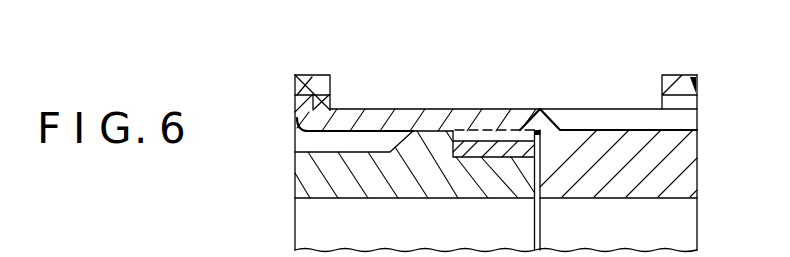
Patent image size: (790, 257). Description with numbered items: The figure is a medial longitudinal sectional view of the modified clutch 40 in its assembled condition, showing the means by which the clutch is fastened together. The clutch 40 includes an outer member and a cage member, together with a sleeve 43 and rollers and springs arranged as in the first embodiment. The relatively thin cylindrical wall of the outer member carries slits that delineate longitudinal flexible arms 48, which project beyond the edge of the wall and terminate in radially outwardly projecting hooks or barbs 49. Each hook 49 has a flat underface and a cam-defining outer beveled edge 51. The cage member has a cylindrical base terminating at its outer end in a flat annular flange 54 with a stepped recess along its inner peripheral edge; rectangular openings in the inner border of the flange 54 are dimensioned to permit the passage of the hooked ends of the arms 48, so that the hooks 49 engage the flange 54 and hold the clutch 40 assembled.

The modified clutch 40 is at (448, 75).
The sleeve 43 is at (499, 150).
The longitudinal flexible arms 48 is at (346, 122).
The hooks or barbs 49 is at (294, 120).
The outer beveled edges 51 is at (296, 95).
The flat annular flange 54 is at (320, 89).